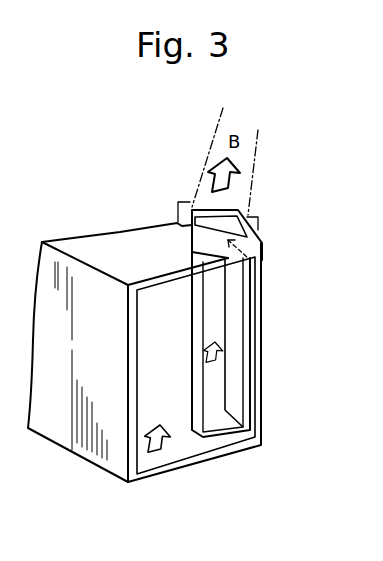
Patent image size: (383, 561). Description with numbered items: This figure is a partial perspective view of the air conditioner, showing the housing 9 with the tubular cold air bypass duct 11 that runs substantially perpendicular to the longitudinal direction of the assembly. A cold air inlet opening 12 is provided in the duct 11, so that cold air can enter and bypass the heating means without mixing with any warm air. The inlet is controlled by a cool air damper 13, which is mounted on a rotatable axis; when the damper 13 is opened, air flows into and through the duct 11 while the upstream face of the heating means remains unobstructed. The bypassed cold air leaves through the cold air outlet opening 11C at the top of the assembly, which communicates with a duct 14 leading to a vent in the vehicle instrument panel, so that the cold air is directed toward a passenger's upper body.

The housing 9 is at (170, 470).
The cold air bypass duct 11 is at (253, 368).
The cold air outlet opening 11C is at (207, 212).
The cold air inlet opening 12 is at (220, 423).
The cool air damper 13 is at (235, 315).
The duct 14 is at (258, 142).